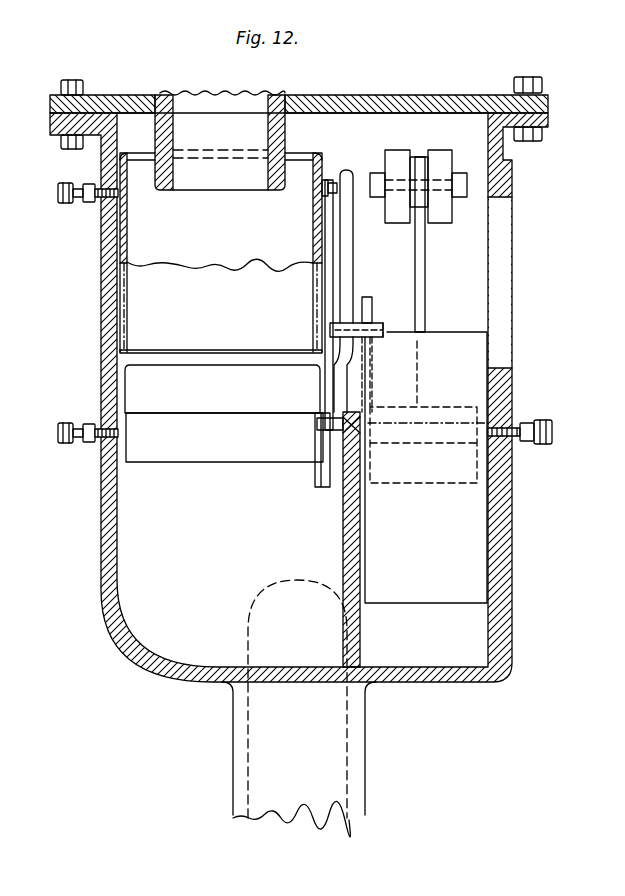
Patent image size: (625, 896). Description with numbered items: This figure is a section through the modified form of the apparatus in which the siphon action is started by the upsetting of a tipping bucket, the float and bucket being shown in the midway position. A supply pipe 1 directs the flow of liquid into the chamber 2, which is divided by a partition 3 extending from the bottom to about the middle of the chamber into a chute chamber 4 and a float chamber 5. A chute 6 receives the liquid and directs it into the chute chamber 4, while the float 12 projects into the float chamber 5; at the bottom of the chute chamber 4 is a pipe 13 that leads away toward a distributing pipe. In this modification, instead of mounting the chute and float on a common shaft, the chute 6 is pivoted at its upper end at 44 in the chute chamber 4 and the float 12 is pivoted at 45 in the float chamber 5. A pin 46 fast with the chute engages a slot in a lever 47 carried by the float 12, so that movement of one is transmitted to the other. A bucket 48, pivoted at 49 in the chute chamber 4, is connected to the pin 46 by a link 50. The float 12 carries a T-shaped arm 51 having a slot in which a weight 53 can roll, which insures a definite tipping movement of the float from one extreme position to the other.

The supply pipe 1 is at (224, 122).
The chamber 2 is at (101, 298).
The partition 3 is at (347, 546).
The chute chamber 4 is at (180, 566).
The float chamber 5 is at (443, 632).
The chute 6 is at (162, 233).
The float 12 is at (400, 602).
The pipe 13 is at (262, 759).
The chute pivot 44 is at (106, 205).
The float pivot 45 is at (357, 428).
The pin 46 is at (383, 335).
The lever 47 is at (373, 310).
The bucket 48 is at (165, 392).
The bucket pivot 49 is at (107, 448).
The link 50 is at (330, 428).
The T-shaped arm 51 is at (426, 265).
The weight 53 is at (440, 206).